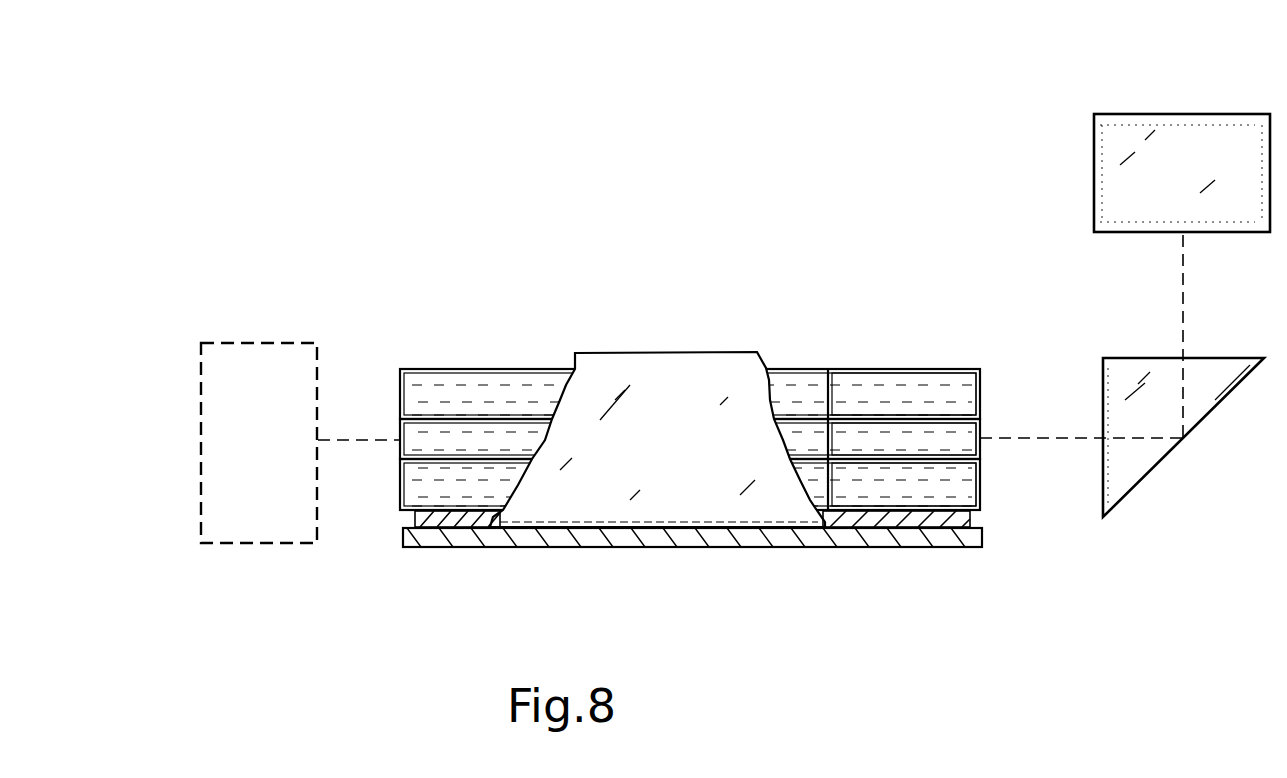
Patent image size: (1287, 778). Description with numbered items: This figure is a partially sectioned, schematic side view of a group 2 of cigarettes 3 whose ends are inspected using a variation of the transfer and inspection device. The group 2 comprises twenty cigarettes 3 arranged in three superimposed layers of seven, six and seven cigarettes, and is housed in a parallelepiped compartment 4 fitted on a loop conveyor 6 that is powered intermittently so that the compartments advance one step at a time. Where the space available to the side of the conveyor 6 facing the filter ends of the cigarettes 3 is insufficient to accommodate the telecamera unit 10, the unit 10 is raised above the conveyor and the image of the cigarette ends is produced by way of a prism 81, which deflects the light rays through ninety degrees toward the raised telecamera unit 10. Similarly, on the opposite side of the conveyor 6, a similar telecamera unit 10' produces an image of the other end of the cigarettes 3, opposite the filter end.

The group of cigarettes 2 is at (815, 366).
The cigarettes 3 is at (483, 478).
The compartment 4 is at (648, 350).
The loop conveyor 6 is at (744, 541).
The telecamera unit 10 is at (1182, 236).
The telecamera unit 10' is at (300, 404).
The prism 81 is at (1163, 460).